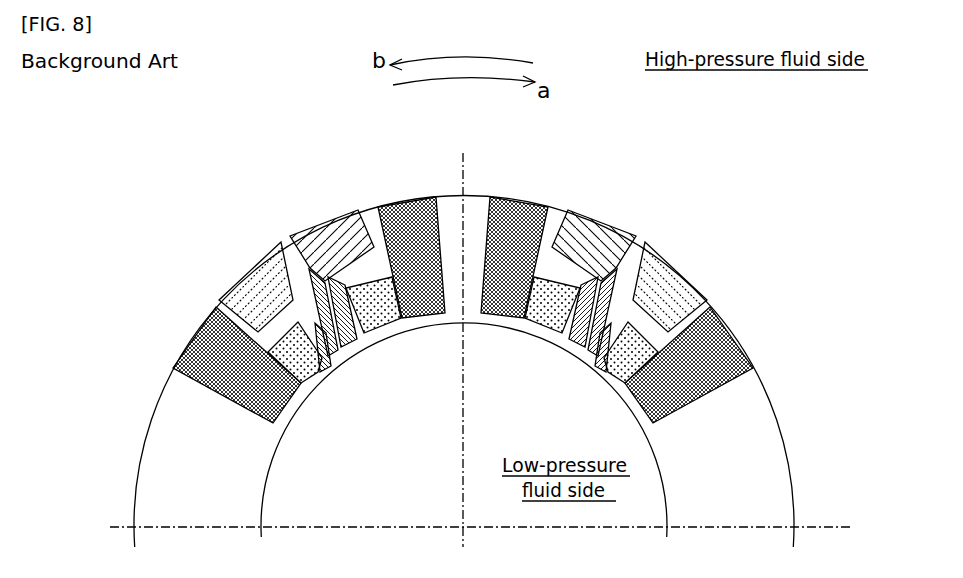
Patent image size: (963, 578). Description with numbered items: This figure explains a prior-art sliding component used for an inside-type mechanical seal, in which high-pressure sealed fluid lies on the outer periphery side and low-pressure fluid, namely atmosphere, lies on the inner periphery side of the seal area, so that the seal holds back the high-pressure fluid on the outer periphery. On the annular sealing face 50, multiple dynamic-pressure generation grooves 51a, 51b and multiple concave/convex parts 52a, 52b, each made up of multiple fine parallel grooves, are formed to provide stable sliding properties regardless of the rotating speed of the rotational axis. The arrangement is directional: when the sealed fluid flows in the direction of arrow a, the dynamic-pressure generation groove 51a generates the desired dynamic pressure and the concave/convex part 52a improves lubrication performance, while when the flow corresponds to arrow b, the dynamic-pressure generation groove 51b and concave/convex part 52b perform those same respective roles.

The sealing face 50 is at (455, 207).
The dynamic-pressure generation groove 51a is at (528, 204).
The dynamic-pressure generation groove 51b is at (388, 201).
The concave/convex part 52a is at (615, 232).
The concave/convex part 52b is at (311, 229).